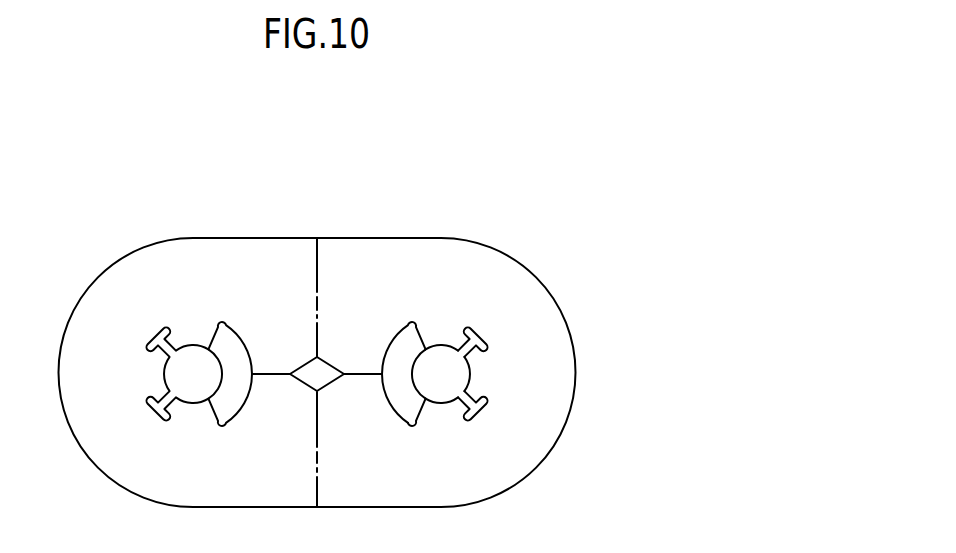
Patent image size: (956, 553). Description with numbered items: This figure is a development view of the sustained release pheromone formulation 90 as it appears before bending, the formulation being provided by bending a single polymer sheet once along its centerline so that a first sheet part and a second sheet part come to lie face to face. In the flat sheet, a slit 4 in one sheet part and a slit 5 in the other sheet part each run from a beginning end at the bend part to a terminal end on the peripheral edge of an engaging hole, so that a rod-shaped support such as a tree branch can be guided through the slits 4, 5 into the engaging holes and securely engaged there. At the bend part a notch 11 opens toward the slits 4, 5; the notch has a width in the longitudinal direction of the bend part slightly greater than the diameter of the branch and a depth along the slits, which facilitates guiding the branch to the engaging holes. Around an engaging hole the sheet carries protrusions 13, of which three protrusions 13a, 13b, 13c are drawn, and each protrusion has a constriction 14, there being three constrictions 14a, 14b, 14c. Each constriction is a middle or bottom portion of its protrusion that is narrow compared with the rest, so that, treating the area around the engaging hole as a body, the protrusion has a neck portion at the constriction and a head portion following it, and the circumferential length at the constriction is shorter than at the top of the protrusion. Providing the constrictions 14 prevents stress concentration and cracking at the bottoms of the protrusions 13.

The sustained release pheromone formulation 90 is at (135, 218).
The slit 4 is at (274, 370).
The slit 5 is at (362, 376).
The notch 11 is at (315, 375).
The protrusions 13 is at (527, 284).
The protrusion 13a is at (419, 373).
The protrusion 13b is at (448, 374).
The protrusion 13c is at (404, 372).
The constrictions 14 is at (447, 377).
The constriction 14a is at (472, 342).
The constriction 14b is at (472, 405).
The constriction 14c is at (417, 412).